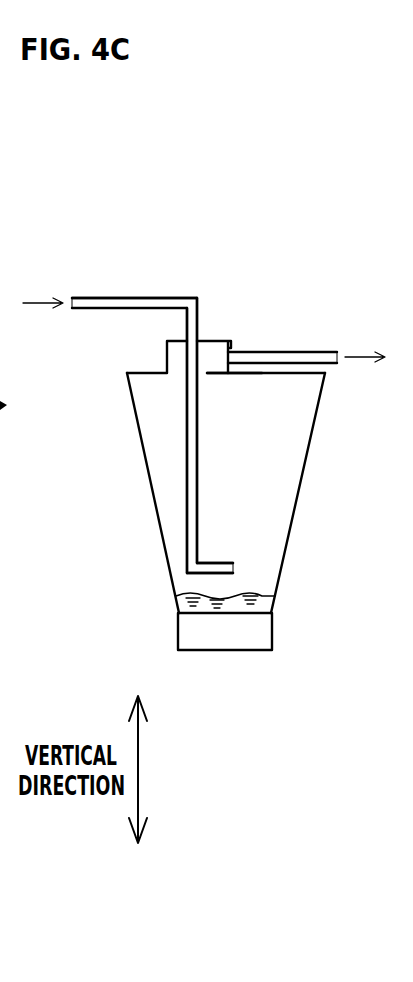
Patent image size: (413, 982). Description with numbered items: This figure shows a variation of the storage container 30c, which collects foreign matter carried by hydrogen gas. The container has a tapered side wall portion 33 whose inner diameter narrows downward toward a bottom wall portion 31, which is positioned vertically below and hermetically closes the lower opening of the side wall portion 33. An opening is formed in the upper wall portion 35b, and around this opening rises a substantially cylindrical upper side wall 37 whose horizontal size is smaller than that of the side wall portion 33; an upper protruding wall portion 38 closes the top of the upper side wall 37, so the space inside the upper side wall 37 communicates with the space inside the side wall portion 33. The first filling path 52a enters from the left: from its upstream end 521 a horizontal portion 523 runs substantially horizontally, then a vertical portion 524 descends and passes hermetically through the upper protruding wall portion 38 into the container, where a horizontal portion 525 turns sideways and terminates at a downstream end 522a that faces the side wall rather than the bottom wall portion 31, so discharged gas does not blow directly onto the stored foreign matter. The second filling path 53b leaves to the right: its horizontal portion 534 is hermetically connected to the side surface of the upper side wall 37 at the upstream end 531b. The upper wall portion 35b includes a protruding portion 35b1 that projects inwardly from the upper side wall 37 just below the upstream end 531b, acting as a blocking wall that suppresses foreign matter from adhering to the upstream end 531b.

The first filling path 52a is at (175, 296).
The upstream end 521 is at (72, 298).
The horizontal portion 523 is at (95, 308).
The vertical portion 524 is at (183, 424).
The horizontal portion 525 is at (207, 570).
The downstream end 522a is at (230, 570).
The upper side wall 37 is at (165, 350).
The upper protruding wall portion 38 is at (215, 340).
The second filling path 53b is at (276, 343).
The upstream end 531b is at (228, 341).
The horizontal portion 534 is at (325, 352).
The upper wall portion 35b is at (262, 373).
The protruding portion 35b1 is at (212, 373).
The storage container 30c is at (148, 501).
The side wall portion 33 is at (297, 497).
The bottom wall portion 31 is at (185, 629).